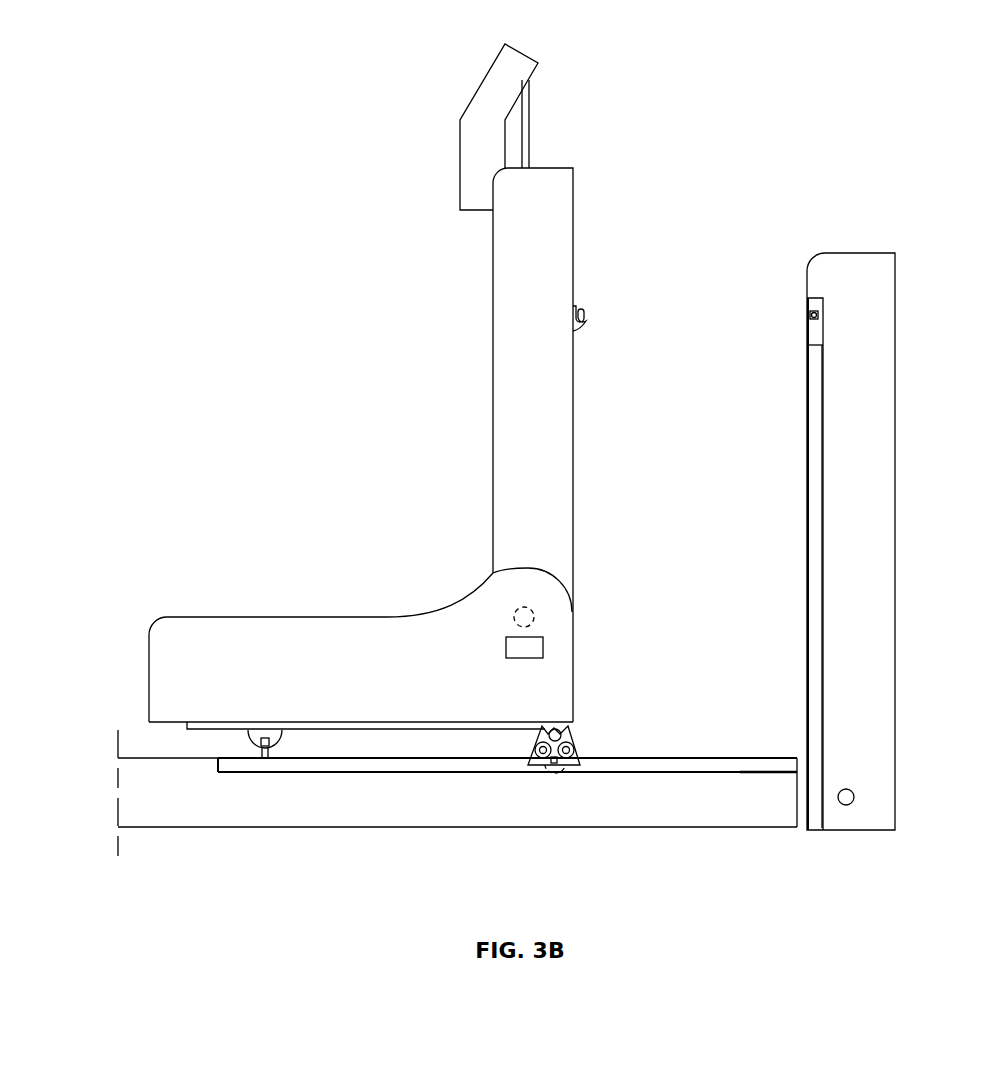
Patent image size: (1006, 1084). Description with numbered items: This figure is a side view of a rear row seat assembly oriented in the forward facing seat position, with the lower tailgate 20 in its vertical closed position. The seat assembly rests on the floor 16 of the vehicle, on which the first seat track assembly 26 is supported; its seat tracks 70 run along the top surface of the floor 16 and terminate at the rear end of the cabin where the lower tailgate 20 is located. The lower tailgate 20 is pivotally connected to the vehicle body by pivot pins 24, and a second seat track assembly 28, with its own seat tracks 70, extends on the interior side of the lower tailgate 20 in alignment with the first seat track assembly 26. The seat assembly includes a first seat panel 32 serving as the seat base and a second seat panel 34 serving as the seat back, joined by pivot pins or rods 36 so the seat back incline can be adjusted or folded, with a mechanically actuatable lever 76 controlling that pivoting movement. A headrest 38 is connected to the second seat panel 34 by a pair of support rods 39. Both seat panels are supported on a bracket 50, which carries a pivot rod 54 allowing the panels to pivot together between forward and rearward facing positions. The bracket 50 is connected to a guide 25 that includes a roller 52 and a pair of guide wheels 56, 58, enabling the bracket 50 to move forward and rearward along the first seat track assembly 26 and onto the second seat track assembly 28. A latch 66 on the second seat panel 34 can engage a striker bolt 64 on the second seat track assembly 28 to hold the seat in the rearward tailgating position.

The floor 16 is at (140, 757).
The lower tailgate 20 is at (863, 253).
The pivot pins 24 is at (846, 797).
The guide 25 is at (521, 764).
The first seat track assembly 26 is at (705, 757).
The second seat track assembly 28 is at (807, 498).
The first seat panel 32 is at (242, 617).
The second seat panel 34 is at (546, 213).
The pivot pins or rods 36 is at (524, 617).
The headrest 38 is at (472, 152).
The support rods 39 is at (526, 137).
The bracket 50 is at (552, 726).
The roller 52 is at (553, 770).
The pivot rod 54 is at (561, 730).
The guide wheel 56 is at (575, 750).
The guide wheel 58 is at (523, 728).
The striker bolt 64 is at (812, 315).
The latch 66 is at (586, 318).
The seat tracks 70 is at (813, 449).
The mechanically actuatable lever 76 is at (515, 648).